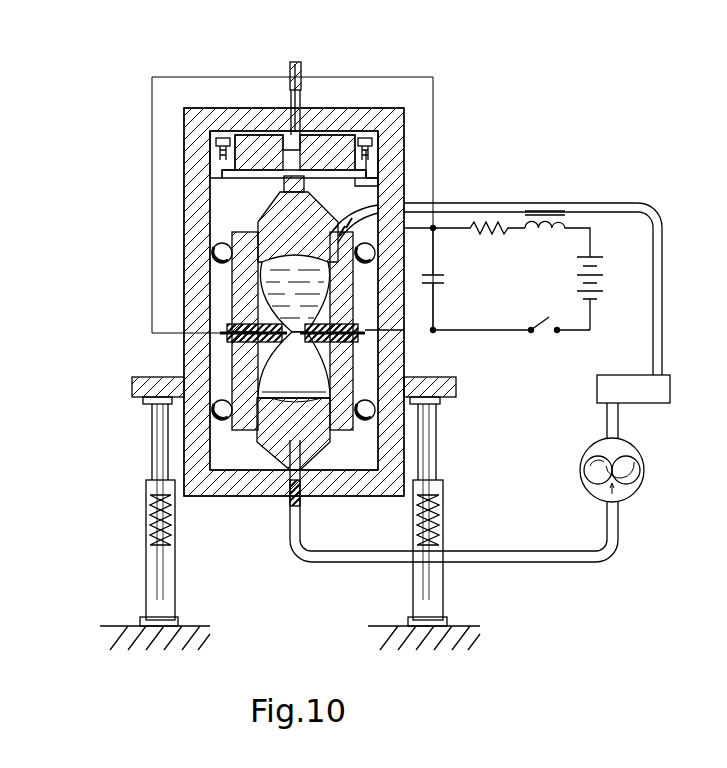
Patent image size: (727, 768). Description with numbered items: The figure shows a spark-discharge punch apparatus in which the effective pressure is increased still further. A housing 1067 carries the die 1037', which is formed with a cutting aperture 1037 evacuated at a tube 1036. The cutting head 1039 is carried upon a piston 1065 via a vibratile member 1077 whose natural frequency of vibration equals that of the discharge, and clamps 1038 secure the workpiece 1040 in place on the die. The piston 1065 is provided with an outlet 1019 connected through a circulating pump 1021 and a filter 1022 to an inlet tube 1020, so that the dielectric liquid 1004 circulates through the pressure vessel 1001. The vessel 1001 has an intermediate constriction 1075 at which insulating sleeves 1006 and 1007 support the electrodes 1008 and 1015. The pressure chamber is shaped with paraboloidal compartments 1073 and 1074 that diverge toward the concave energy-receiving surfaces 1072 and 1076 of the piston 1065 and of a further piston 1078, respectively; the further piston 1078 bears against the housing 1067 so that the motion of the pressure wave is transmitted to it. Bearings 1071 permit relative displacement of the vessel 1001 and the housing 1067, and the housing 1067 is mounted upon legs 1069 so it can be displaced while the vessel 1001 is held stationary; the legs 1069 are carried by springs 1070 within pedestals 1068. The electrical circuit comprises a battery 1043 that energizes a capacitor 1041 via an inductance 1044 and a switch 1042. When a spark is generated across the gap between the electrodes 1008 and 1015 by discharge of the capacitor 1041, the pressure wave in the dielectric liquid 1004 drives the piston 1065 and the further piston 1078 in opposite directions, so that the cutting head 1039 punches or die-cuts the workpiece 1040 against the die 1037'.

The pressure vessel 1001 is at (240, 440).
The dielectric liquid 1004 is at (232, 300).
The insulating sleeve 1006 is at (210, 337).
The insulating sleeve 1007 is at (378, 346).
The electrode 1008 is at (378, 312).
The electrode 1015 is at (300, 334).
The outlet 1019 is at (520, 203).
The inlet tube 1020 is at (318, 563).
The circulating pump 1021 is at (630, 500).
The filter 1022 is at (658, 404).
The tube 1036 is at (290, 62).
The cutting aperture 1037 is at (262, 111).
The die 1037' is at (340, 104).
The clamps 1038 is at (222, 160).
The cutting head 1039 is at (284, 186).
The workpiece 1040 is at (378, 182).
The capacitor 1041 is at (443, 277).
The switch 1042 is at (546, 340).
The battery 1043 is at (594, 300).
The inductance 1044 is at (565, 238).
The piston 1065 is at (240, 238).
The housing 1067 is at (438, 460).
The pedestals 1068 is at (146, 576).
The legs 1069 is at (431, 470).
The springs 1070 is at (443, 525).
The bearings 1071 is at (212, 405).
The concave energy-receiving surface 1072 is at (262, 290).
The paraboloidal compartment 1073 is at (222, 322).
The paraboloidal compartment 1074 is at (222, 342).
The intermediate constriction 1075 is at (453, 376).
The concave energy-receiving surface 1076 is at (312, 440).
The vibratile member 1077 is at (262, 228).
The further piston 1078 is at (285, 462).